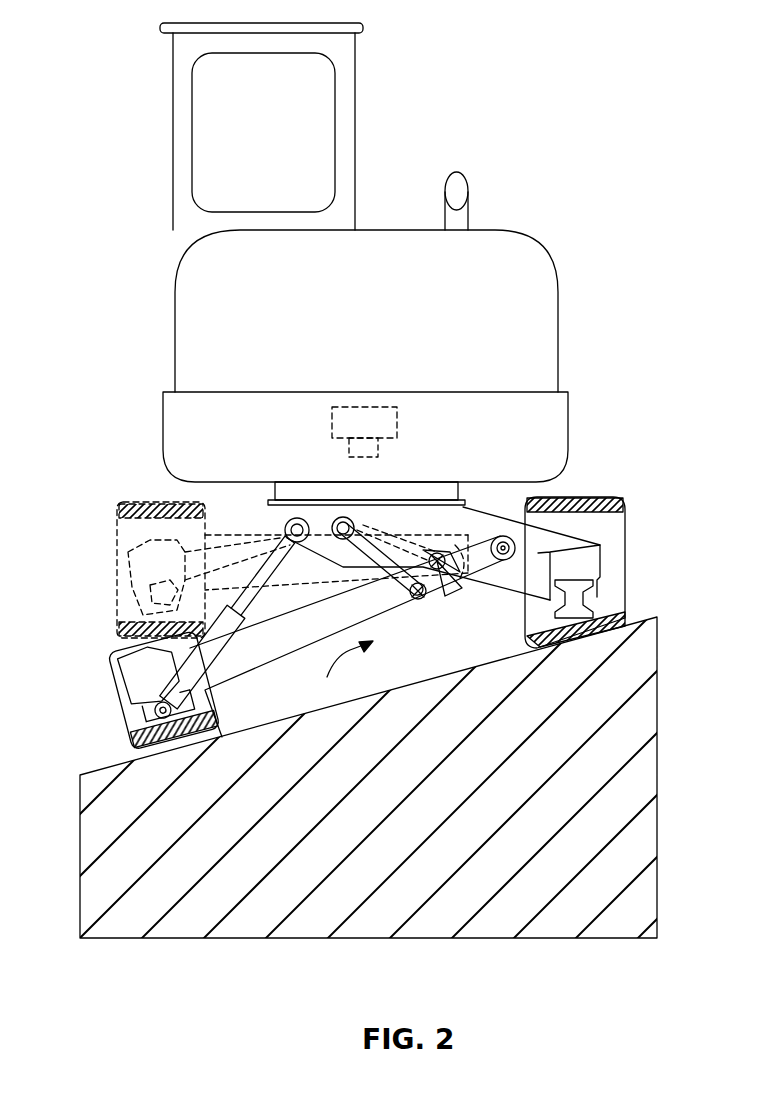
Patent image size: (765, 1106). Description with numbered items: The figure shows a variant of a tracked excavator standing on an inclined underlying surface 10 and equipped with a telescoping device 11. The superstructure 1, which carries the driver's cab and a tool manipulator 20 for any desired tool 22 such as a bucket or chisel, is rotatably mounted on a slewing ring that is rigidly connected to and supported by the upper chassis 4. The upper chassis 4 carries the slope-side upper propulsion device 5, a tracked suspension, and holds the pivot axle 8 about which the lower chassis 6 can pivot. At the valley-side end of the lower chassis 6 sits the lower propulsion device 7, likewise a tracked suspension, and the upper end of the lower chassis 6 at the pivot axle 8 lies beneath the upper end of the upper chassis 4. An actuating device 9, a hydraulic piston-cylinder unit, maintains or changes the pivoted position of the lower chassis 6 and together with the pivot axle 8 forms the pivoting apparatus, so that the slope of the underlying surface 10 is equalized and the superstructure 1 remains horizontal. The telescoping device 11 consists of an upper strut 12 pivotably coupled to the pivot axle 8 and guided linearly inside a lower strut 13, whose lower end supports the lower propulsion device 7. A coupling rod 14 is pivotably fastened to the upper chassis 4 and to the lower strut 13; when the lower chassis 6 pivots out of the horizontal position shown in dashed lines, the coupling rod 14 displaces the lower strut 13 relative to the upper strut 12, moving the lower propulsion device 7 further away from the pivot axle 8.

The superstructure 1 is at (548, 308).
The upper chassis 4 is at (538, 555).
The upper propulsion device 5 is at (620, 590).
The lower chassis 6 is at (296, 649).
The lower propulsion device 7 is at (135, 719).
The pivot axle 8 is at (496, 566).
The actuating device 9 is at (223, 650).
The underlying surface 10 is at (520, 653).
The telescoping device 11 is at (346, 671).
The upper strut 12 is at (452, 575).
The lower strut 13 is at (372, 616).
The coupling rod 14 is at (411, 597).
The tool manipulator 20 is at (386, 406).
The tool 22 is at (375, 446).